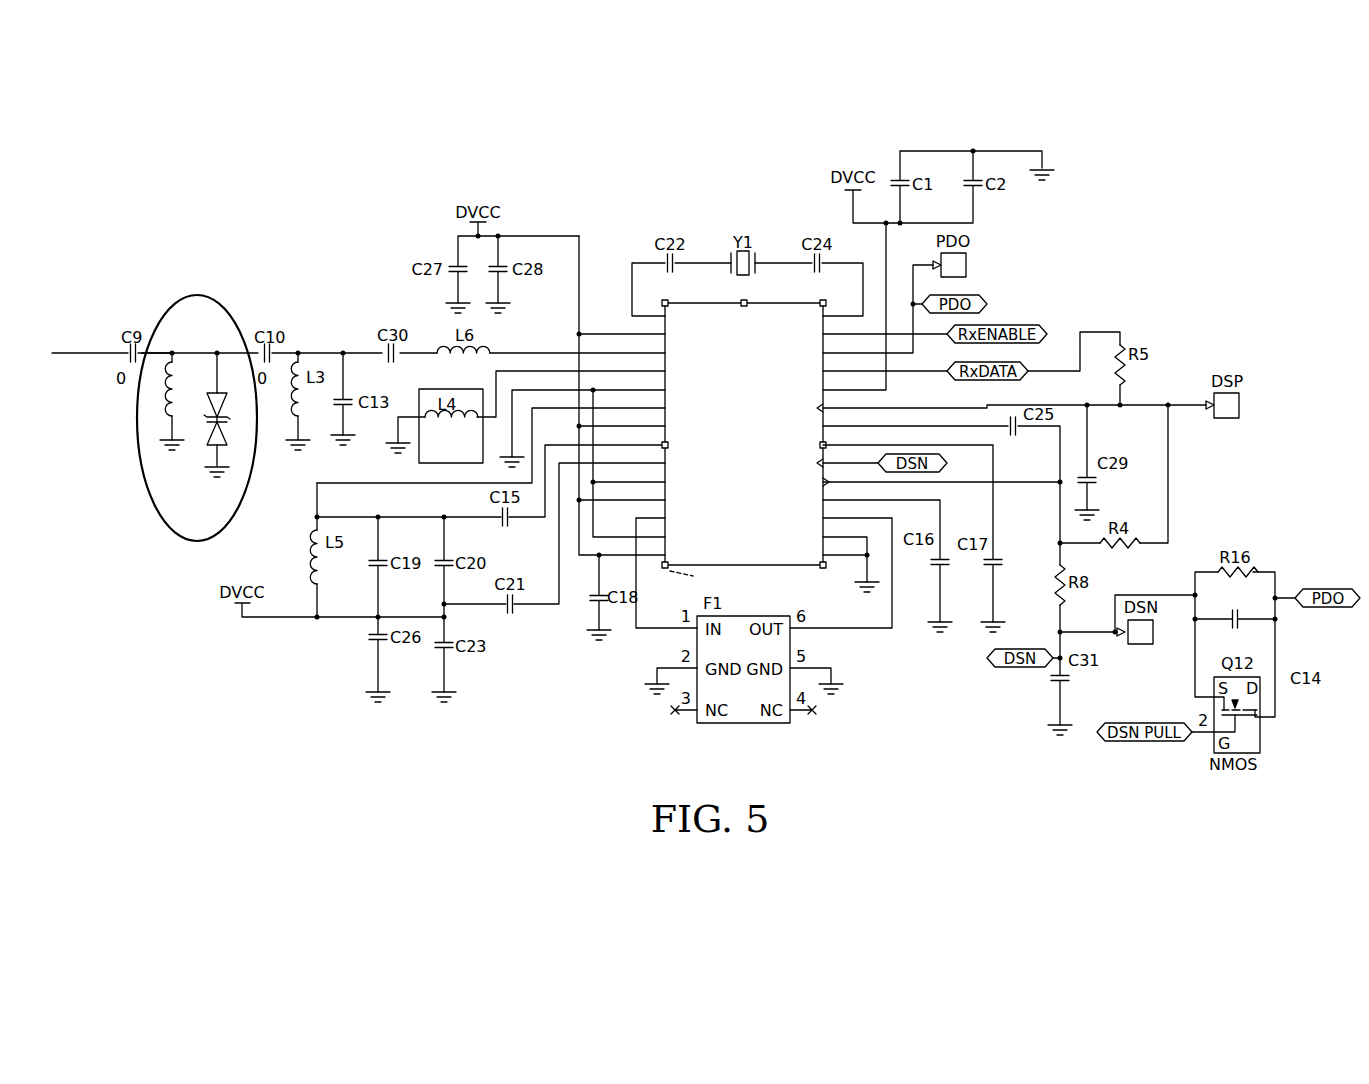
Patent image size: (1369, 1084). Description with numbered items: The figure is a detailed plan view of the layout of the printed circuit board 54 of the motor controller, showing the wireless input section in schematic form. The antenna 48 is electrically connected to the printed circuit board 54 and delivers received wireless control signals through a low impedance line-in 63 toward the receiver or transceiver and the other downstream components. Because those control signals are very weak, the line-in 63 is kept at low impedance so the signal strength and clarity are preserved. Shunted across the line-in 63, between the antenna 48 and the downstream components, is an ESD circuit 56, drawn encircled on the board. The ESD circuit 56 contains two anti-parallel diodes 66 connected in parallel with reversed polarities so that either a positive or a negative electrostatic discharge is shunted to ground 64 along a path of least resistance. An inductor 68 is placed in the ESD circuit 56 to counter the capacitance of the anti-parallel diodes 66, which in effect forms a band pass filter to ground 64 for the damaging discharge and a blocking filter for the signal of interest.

The antenna 48 is at (88, 330).
The printed circuit board 54 is at (684, 191).
The ESD circuit 56 is at (226, 298).
The line-in 63 is at (158, 352).
The ground 64 is at (170, 452).
The anti-parallel diodes 66 is at (227, 443).
The inductor 68 is at (158, 401).